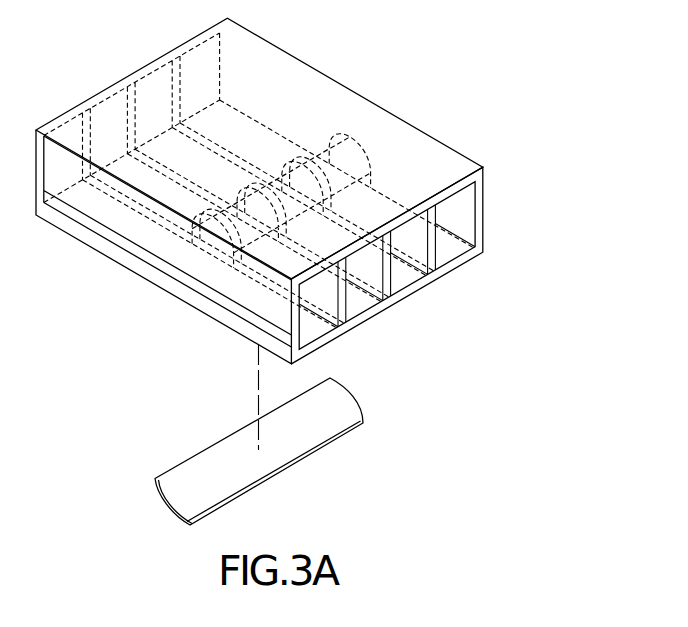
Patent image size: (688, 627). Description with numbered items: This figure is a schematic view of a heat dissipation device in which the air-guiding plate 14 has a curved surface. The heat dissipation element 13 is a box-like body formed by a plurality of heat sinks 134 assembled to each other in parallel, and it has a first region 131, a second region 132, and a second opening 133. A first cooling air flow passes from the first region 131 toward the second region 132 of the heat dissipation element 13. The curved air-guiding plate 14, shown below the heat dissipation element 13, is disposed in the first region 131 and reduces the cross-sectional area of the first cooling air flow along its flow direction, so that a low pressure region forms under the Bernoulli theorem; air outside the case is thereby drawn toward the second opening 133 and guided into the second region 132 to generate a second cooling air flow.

The heat dissipation element 13 is at (273, 191).
The first region 131 is at (388, 142).
The second region 132 is at (257, 74).
The second opening 133 is at (202, 263).
The heat sinks 134 is at (458, 254).
The air-guiding plate 14 is at (191, 454).